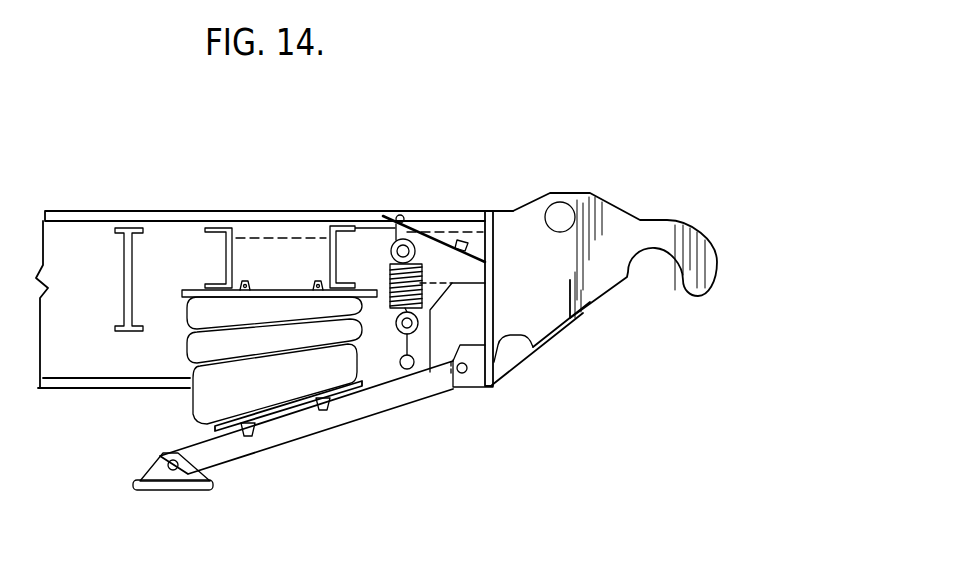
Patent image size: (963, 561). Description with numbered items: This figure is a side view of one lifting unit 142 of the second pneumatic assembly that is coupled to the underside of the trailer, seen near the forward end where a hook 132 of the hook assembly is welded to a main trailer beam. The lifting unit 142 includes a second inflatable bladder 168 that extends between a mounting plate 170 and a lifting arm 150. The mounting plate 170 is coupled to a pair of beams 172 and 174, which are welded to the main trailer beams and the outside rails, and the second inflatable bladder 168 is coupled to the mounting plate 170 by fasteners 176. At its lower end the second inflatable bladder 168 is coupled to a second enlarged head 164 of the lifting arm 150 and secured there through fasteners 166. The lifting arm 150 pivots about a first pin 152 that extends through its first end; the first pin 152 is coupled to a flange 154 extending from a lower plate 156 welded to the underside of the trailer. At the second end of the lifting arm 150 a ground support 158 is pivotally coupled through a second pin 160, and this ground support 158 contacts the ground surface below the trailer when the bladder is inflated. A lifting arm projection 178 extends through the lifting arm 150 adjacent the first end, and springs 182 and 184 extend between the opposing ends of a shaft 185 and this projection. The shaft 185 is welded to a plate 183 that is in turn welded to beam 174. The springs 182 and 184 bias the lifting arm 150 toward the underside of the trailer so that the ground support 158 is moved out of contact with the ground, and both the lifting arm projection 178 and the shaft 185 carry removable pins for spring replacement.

The hook 132 is at (630, 233).
The lifting unit 142 is at (187, 405).
The lifting arm 150 is at (360, 418).
The first pin 152 is at (465, 386).
The flange 154 is at (538, 343).
The lower plate 156 is at (528, 360).
The ground support 158 is at (150, 490).
The second pin 160 is at (190, 488).
The second enlarged head 164 is at (368, 390).
The fasteners 166 is at (322, 415).
The second inflatable bladder 168 is at (243, 407).
The mounting plate 170 is at (193, 282).
The beam 172 is at (218, 226).
The beam 174 is at (340, 226).
The fasteners 176 is at (247, 283).
The lifting arm projection 178 is at (409, 370).
The spring 182 is at (432, 275).
The plate 183 is at (430, 253).
The spring 184 is at (425, 345).
The shaft 185 is at (398, 232).